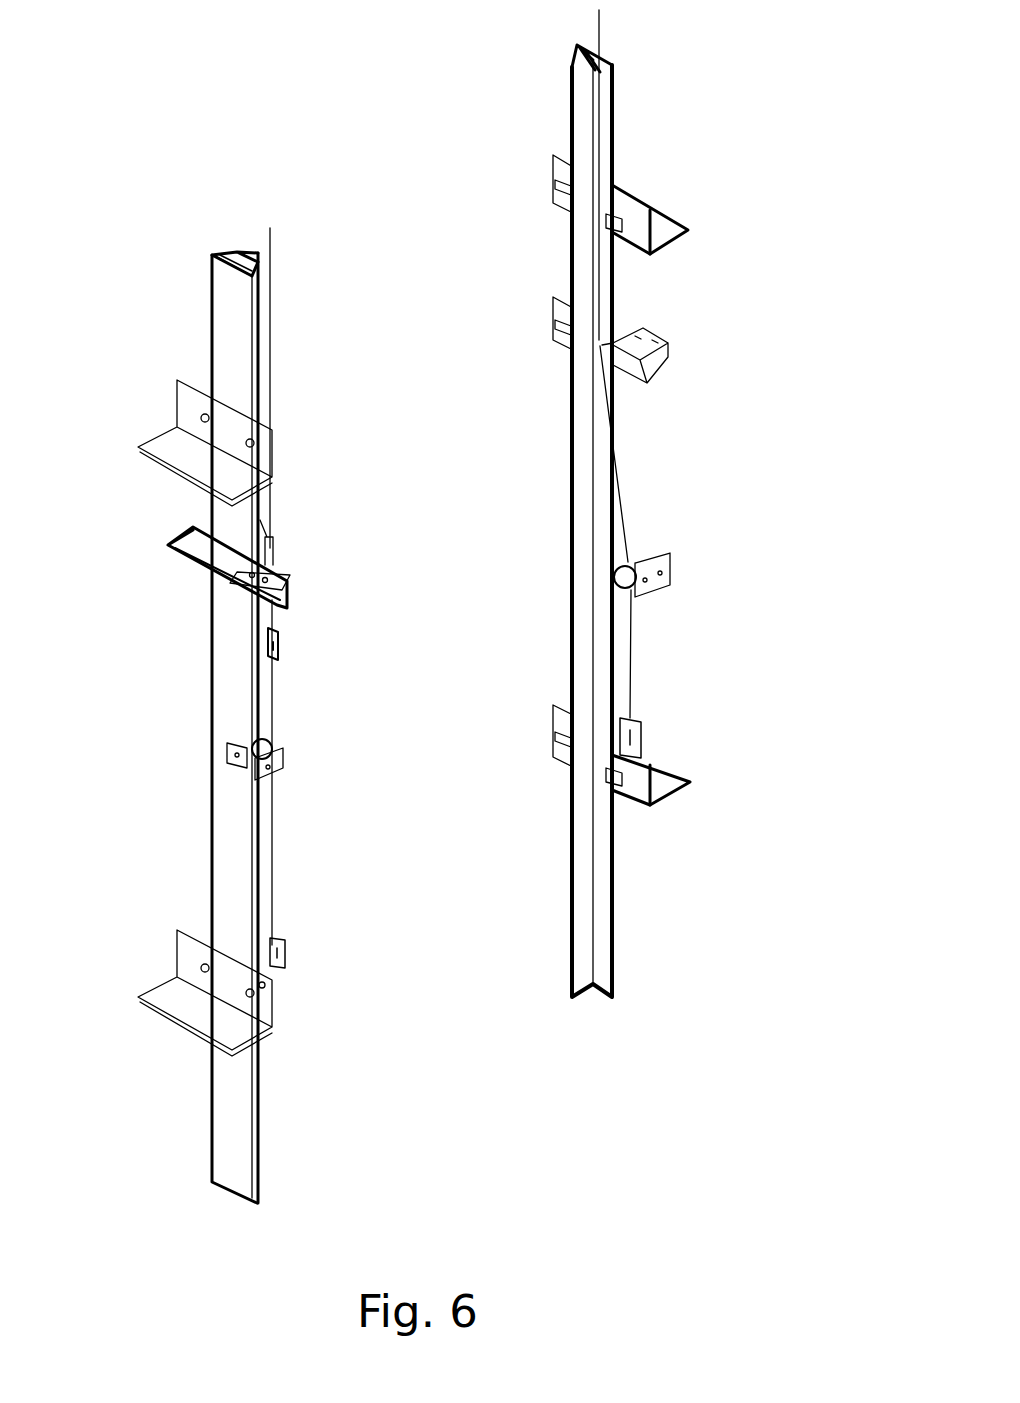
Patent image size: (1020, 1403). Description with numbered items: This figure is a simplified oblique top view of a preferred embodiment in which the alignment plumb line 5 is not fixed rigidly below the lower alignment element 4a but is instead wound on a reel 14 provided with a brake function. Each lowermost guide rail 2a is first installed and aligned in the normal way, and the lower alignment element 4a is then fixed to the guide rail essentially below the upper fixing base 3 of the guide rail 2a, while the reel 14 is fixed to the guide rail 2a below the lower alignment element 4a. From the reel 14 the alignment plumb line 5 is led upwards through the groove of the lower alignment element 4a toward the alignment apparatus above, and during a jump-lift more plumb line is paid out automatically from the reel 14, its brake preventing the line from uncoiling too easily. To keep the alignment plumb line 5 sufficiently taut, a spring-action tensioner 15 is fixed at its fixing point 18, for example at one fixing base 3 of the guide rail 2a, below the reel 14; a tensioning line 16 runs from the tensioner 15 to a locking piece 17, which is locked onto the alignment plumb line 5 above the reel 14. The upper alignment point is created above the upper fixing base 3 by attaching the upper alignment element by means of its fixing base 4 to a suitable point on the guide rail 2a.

The guide rail 2a is at (232, 816).
The fixing base 3 is at (172, 437).
The fixing base 4 is at (178, 540).
The lower alignment element 4a is at (280, 570).
The alignment plumb line 5 is at (270, 232).
The reel 14 is at (290, 752).
The tensioner 15 is at (287, 955).
The tensioning line 16 is at (273, 850).
The locking piece 17 is at (280, 648).
The fixing point 18 is at (266, 990).